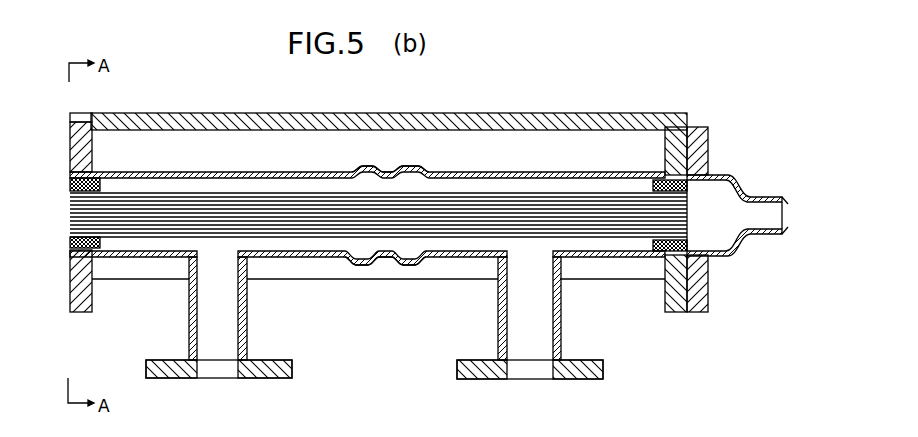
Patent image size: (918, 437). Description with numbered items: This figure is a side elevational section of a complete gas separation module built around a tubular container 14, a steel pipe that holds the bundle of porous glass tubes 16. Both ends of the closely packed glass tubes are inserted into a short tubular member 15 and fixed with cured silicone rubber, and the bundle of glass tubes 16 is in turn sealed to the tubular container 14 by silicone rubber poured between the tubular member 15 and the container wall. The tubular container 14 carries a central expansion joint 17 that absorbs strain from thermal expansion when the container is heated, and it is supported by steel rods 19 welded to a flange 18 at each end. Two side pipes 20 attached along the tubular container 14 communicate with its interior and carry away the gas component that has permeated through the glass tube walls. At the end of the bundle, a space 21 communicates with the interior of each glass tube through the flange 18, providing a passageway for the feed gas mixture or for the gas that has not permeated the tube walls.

The tubular container 14 is at (222, 173).
The tubular member 15 is at (100, 182).
The bundle of porous glass tubes 16 is at (384, 228).
The expansion joint 17 is at (390, 173).
The flange 18 is at (80, 120).
The steel rod 19 is at (530, 114).
The side pipe 20 is at (248, 298).
The space 21 is at (712, 215).